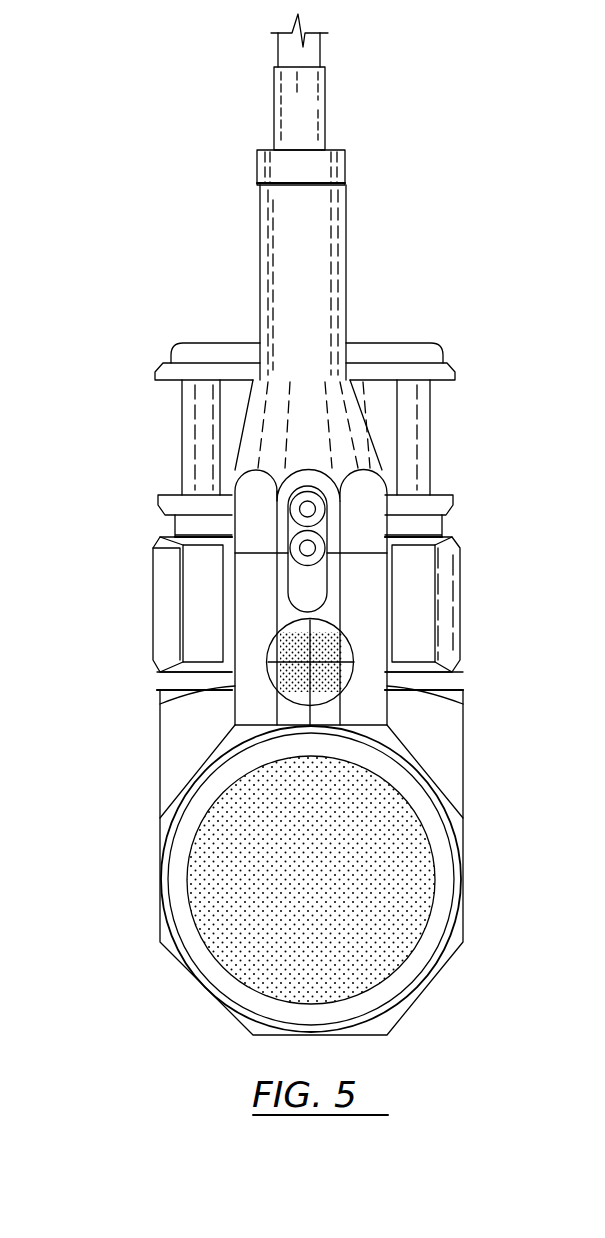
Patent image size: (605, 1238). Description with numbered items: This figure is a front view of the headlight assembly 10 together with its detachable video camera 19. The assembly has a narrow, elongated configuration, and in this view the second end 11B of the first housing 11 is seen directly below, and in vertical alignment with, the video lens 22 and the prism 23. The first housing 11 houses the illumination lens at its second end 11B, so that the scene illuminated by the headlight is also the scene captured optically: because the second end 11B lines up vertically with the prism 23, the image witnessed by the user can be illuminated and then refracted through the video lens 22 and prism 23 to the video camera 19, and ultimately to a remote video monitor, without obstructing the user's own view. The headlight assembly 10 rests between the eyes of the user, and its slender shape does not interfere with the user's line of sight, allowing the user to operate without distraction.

The headlight assembly 10 is at (138, 218).
The first housing 11 is at (460, 364).
The second end 11B is at (213, 885).
The video camera 19 is at (350, 317).
The video lens 22 is at (297, 543).
The prism 23 is at (277, 660).